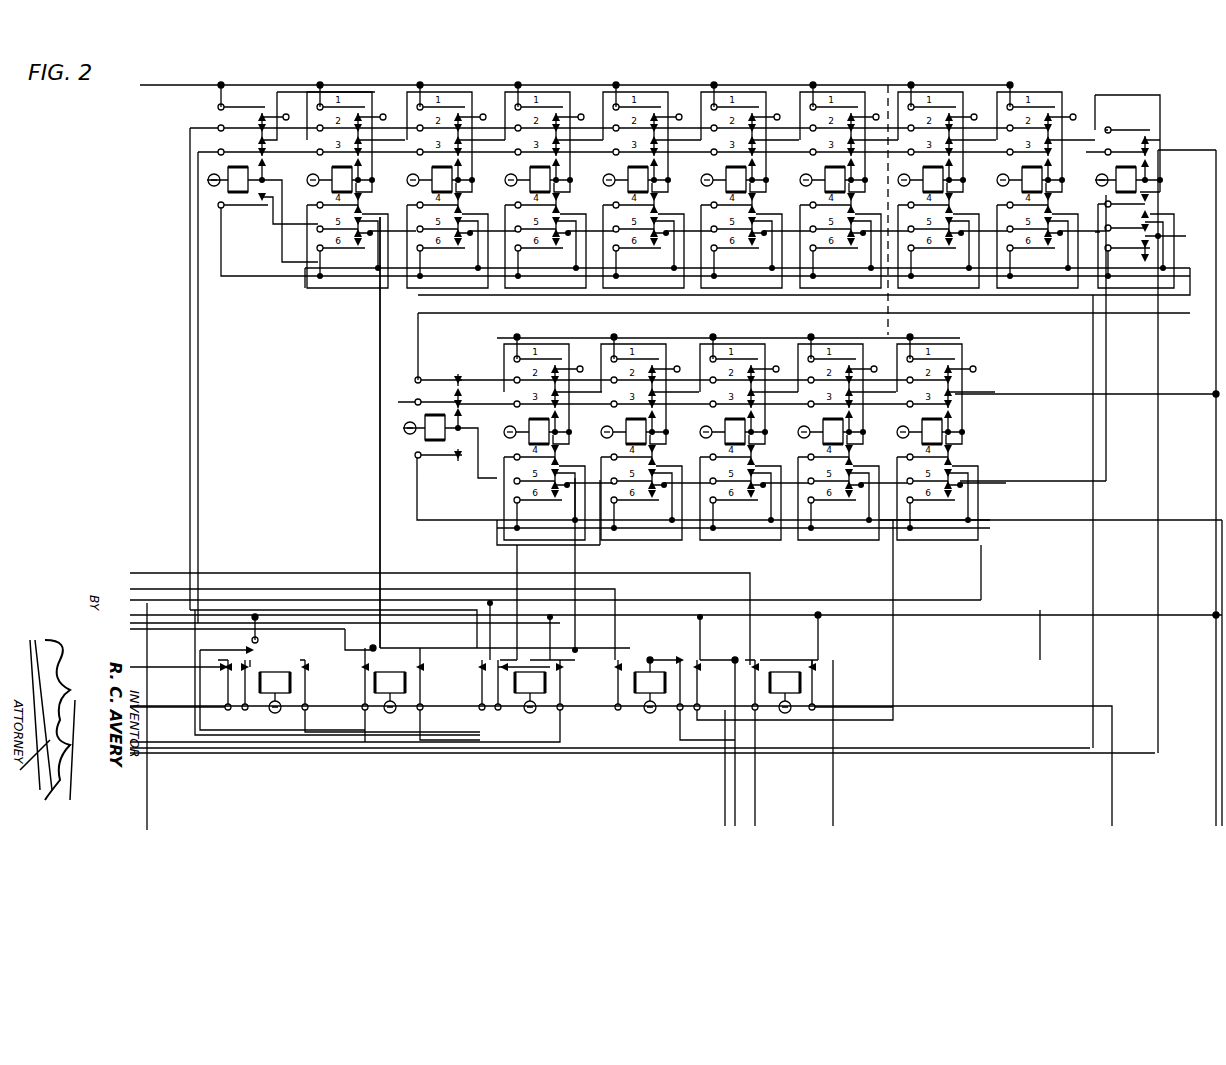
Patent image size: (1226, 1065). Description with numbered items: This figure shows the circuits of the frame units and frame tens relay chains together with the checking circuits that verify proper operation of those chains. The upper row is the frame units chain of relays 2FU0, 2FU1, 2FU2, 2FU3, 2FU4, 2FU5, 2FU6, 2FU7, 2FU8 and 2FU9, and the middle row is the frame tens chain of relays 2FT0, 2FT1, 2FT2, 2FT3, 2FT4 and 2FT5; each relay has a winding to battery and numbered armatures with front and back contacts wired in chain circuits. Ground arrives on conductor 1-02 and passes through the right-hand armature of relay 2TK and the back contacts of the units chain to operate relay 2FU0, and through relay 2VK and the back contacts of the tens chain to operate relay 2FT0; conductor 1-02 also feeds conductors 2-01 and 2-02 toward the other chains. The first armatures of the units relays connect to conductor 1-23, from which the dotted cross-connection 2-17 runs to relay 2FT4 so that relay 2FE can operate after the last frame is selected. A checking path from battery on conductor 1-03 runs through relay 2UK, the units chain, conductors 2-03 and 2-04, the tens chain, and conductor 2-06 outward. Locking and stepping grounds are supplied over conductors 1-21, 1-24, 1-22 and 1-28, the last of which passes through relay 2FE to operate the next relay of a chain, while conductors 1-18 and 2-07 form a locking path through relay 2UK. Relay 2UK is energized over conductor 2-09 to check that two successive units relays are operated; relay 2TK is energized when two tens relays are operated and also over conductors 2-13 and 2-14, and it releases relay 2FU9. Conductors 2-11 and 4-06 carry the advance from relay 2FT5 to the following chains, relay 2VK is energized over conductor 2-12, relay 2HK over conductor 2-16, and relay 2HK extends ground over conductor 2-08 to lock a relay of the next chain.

The conductor 1-23 is at (150, 88).
The conductor 2-03 is at (238, 282).
The cross-connection 2-17 is at (890, 310).
The conductor 2-13 is at (1035, 396).
The conductor 2-04 is at (1035, 478).
The conductor 2-14 is at (1150, 472).
The conductor 2-06 is at (1033, 522).
The conductor 2-11 is at (983, 578).
The conductor 2-09 is at (378, 475).
The conductor 1-22 is at (284, 574).
The conductor 1-24 is at (344, 590).
The conductor 1-02 is at (805, 612).
The conductor 1-03 is at (156, 630).
The conductor 1-21 is at (320, 630).
The conductor 2-07 is at (156, 672).
The conductor 1-18 is at (156, 712).
The conductor 1-28 is at (255, 745).
The conductor 4-06 is at (149, 773).
The conductor 2-01 is at (985, 705).
The conductor 2-12 is at (723, 790).
The conductor 2-08 is at (757, 790).
The conductor 2-16 is at (835, 790).
The conductor 2-02 is at (1214, 790).
The frame units relay 2FU0 is at (262, 162).
The frame units relay 2FU1 is at (355, 185).
The frame units relay 2FU2 is at (405, 167).
The frame units relay 2FU3 is at (536, 185).
The frame units relay 2FU4 is at (634, 185).
The frame units relay 2FU5 is at (732, 185).
The frame units relay 2FU6 is at (831, 185).
The frame units relay 2FU7 is at (945, 185).
The frame units relay 2FU8 is at (1020, 167).
The frame units relay 2FU9 is at (1095, 167).
The frame tens relay 2FT0 is at (425, 420).
The frame tens relay 2FT1 is at (552, 437).
The frame tens relay 2FT2 is at (626, 419).
The frame tens relay 2FT3 is at (731, 437).
The frame tens relay 2FT4 is at (829, 437).
The frame tens relay 2FT5 is at (928, 437).
The units check relay 2UK is at (262, 700).
The tens check relay 2TK is at (395, 660).
The frame end relay 2FE is at (522, 700).
The vertical group check relay 2VK is at (645, 672).
The horizontal group check relay 2HK is at (782, 672).